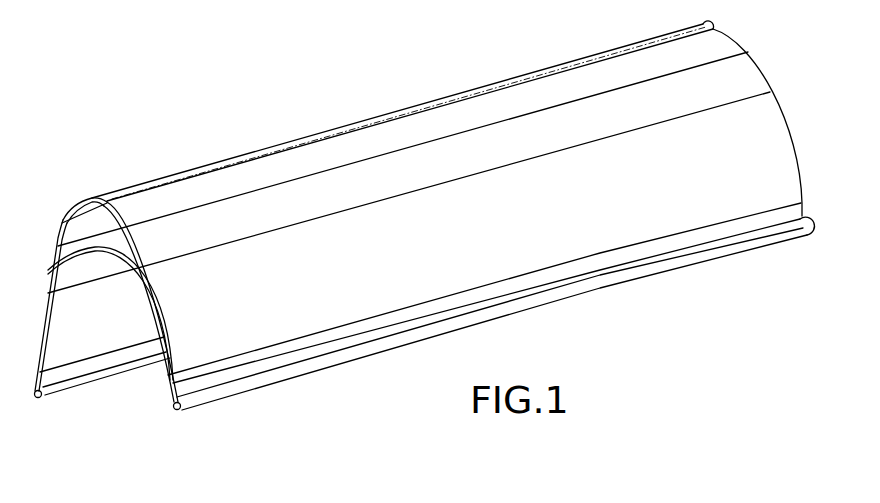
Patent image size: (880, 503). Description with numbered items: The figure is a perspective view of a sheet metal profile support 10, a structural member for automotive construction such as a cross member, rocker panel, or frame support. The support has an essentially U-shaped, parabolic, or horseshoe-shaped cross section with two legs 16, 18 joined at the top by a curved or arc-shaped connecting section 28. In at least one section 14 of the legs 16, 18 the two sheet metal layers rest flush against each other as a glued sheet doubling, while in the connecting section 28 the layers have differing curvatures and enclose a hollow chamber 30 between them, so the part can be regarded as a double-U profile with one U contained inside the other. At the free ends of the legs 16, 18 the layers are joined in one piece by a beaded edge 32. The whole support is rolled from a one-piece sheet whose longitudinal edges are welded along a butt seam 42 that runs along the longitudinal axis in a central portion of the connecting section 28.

The sheet metal profile support 10 is at (369, 84).
The section of the legs 14 is at (46, 331).
The first leg 16 is at (42, 300).
The second leg 18 is at (178, 328).
The connecting section 28 is at (103, 259).
The hollow chamber 30 is at (108, 218).
The beaded edge 32 is at (182, 419).
The butt seam 42 is at (179, 172).